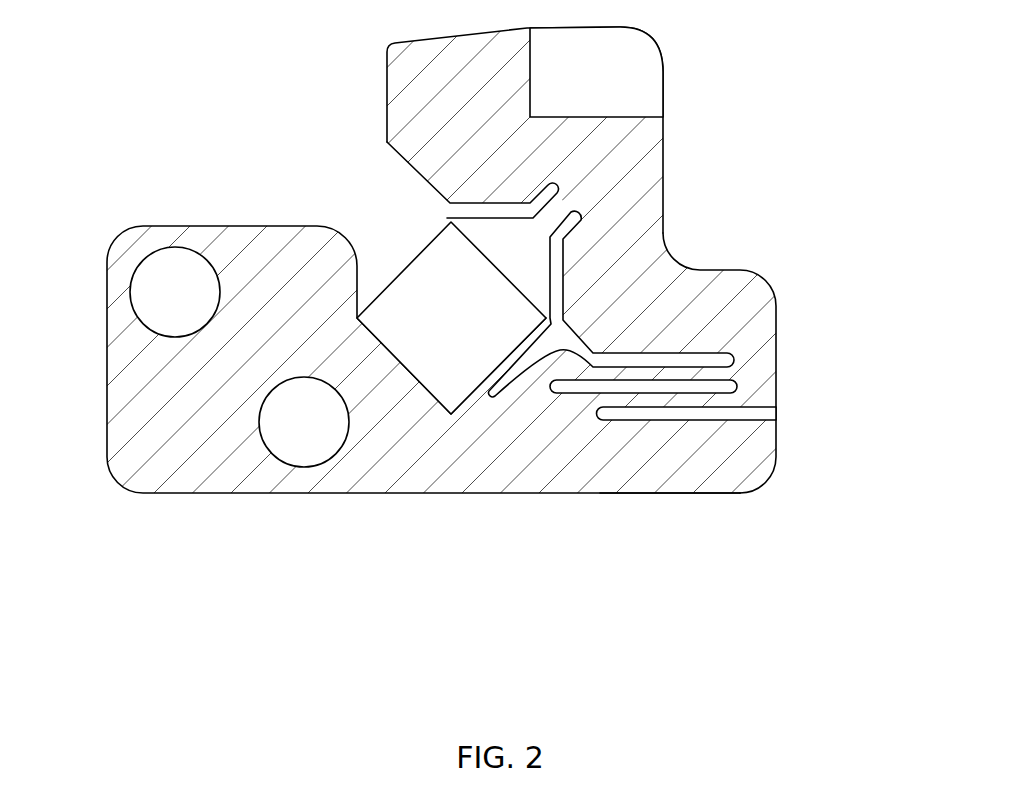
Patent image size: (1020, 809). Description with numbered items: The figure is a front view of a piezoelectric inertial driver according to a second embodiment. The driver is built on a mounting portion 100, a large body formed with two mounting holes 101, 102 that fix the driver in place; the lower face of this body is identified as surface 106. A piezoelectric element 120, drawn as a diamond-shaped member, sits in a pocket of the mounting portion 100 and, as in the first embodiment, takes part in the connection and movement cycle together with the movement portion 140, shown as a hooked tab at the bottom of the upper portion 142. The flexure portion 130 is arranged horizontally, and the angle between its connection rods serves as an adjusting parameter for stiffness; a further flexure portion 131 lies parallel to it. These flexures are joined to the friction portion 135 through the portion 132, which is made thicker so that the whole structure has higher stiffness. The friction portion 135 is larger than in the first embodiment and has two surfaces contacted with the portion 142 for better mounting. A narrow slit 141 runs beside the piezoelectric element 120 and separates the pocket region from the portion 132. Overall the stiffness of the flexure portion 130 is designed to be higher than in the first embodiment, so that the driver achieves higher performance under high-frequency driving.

The mounting portion 100 is at (133, 355).
The mounting hole 101 is at (168, 273).
The mounting hole 102 is at (310, 445).
The bottom surface 106 is at (651, 493).
The piezoelectric element 120 is at (398, 273).
The flexure portion 130 is at (668, 402).
The flexure portion 131 is at (668, 372).
The connecting portion 132 is at (700, 318).
The friction portion 135 is at (613, 42).
The movement portion 140 is at (503, 237).
The engaging slit 141 is at (562, 208).
The portion 142 is at (428, 88).